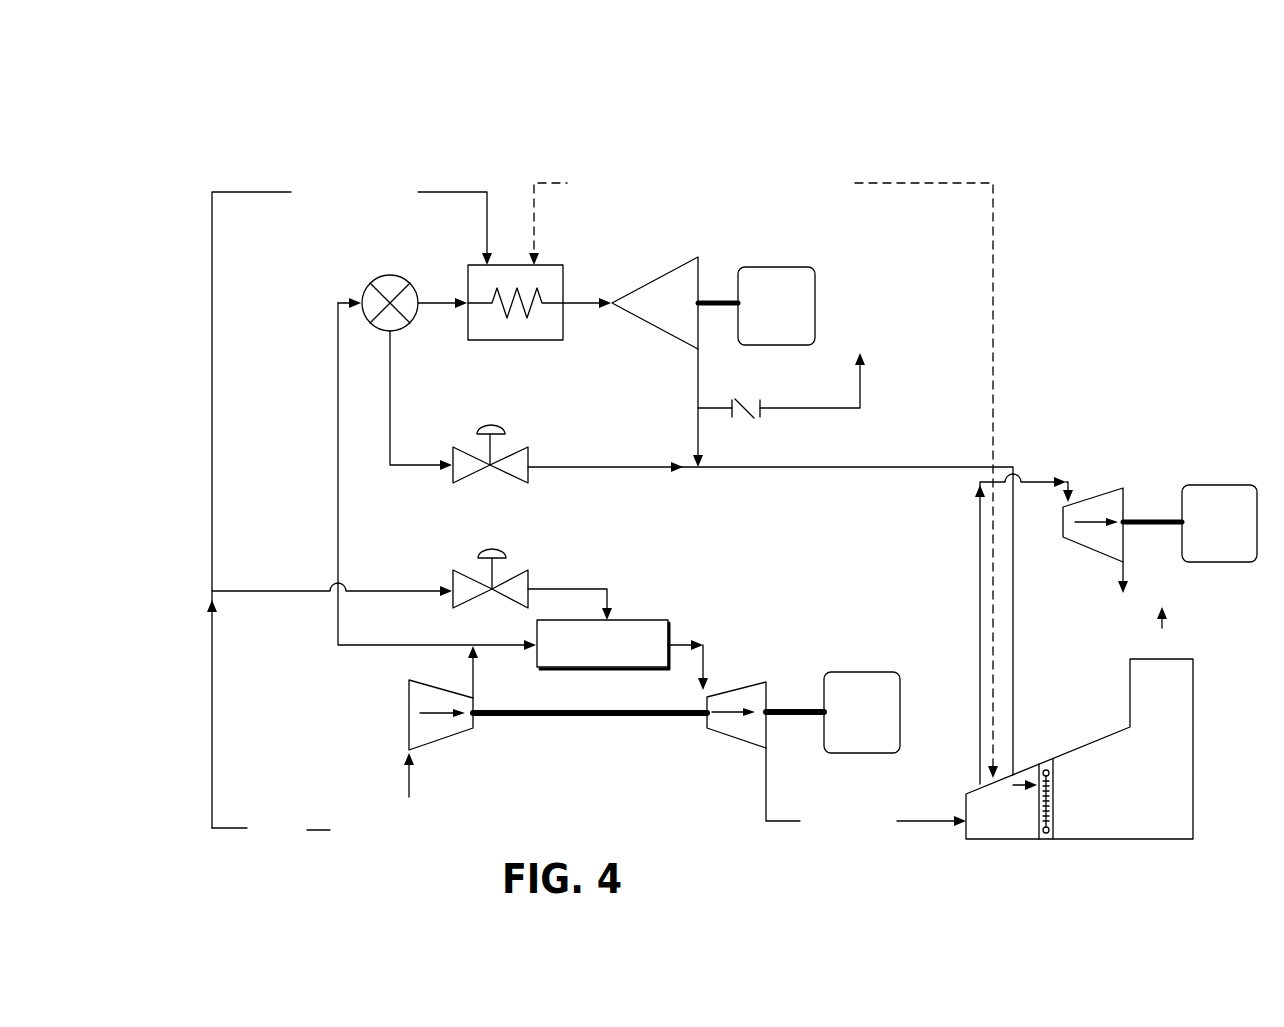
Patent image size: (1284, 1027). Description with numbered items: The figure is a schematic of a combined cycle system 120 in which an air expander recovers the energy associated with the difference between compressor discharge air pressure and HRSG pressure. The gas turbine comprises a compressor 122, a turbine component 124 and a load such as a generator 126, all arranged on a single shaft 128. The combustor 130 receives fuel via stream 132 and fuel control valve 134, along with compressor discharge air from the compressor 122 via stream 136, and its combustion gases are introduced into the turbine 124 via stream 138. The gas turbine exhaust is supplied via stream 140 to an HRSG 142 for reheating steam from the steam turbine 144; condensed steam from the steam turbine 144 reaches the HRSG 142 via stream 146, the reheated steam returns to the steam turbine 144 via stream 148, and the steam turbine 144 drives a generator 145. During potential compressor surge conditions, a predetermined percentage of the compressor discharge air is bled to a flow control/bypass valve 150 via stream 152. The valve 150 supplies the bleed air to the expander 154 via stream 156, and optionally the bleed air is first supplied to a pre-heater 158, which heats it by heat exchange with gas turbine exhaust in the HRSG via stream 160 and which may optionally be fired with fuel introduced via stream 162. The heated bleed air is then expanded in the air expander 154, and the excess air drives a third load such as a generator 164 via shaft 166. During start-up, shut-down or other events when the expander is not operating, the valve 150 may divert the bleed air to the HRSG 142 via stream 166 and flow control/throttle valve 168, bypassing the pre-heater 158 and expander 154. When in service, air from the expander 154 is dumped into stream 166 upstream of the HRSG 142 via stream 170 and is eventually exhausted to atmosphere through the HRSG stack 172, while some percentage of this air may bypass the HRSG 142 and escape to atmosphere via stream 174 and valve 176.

The combined cycle system 120 is at (1098, 130).
The compressor 122 is at (427, 730).
The turbine component 124 is at (725, 725).
The load 126 is at (850, 683).
The shaft 128 is at (622, 717).
The combustor 130 is at (648, 620).
The fuel stream 132 is at (357, 590).
The fuel control valve 134 is at (512, 573).
The compressor discharge air stream 136 is at (473, 677).
The combustion gas stream 138 is at (707, 670).
The gas turbine exhaust stream 140 is at (768, 802).
The HRSG 142 is at (926, 862).
The steam turbine 144 is at (1095, 502).
The generator 145 is at (1230, 493).
The condensed steam stream 146 is at (1127, 565).
The reheated steam stream 148 is at (980, 600).
The flow control/bypass valve 150 is at (408, 300).
The bleed air stream 152 is at (362, 648).
The air expander 154 is at (688, 315).
The bleed air supply stream 156 is at (440, 307).
The pre-heater 158 is at (507, 273).
The heat exchange stream 160 is at (993, 331).
The pre-heater fuel stream 162 is at (212, 367).
The third load 164 is at (788, 267).
The shaft / bypass stream 166 is at (732, 297).
The flow control/throttle valve 168 is at (513, 445).
The expander discharge stream 170 is at (700, 437).
The HRSG stack 172 is at (1152, 712).
The bypass stream 174 is at (792, 407).
The valve 176 is at (745, 417).